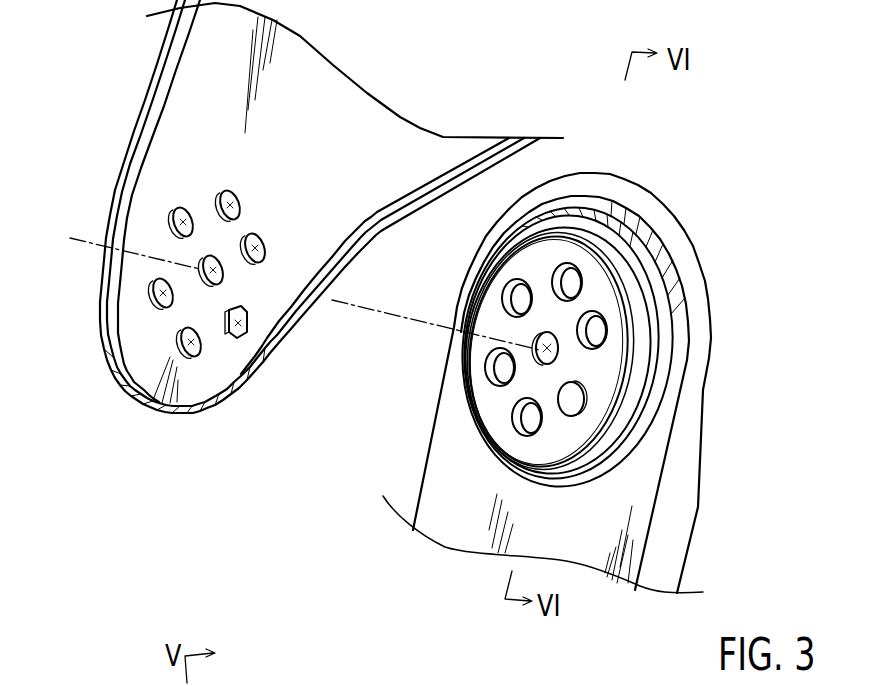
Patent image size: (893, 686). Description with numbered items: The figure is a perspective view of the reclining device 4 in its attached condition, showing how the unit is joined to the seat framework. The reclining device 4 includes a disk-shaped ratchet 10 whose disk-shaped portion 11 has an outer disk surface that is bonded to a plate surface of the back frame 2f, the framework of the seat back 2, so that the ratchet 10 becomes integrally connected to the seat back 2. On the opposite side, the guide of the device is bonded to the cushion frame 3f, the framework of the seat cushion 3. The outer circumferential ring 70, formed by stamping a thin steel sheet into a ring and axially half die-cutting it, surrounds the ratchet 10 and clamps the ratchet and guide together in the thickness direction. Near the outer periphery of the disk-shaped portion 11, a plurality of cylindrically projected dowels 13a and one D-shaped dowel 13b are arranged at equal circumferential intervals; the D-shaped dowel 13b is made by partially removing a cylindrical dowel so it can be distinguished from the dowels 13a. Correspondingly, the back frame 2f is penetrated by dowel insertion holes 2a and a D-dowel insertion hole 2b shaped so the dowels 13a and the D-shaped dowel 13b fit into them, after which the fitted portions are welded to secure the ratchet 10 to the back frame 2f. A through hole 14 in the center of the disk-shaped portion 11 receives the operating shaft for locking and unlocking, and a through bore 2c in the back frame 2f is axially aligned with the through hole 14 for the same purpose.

The seat back 2 is at (306, 341).
The back frame 2f is at (319, 100).
The dowel insertion holes 2a is at (187, 206).
The D-dowel insertion hole 2b is at (247, 320).
The through bore 2c is at (215, 256).
The seat cushion 3 is at (579, 383).
The cushion frame 3f is at (640, 498).
The reclining device 4 is at (581, 216).
The ratchet 10 is at (598, 284).
The disk-shaped portion 11 is at (613, 390).
The outer circumferential ring 70 is at (631, 222).
The dowels 13a is at (556, 278).
The D-shaped dowel 13b is at (575, 400).
The through hole 14 is at (542, 349).